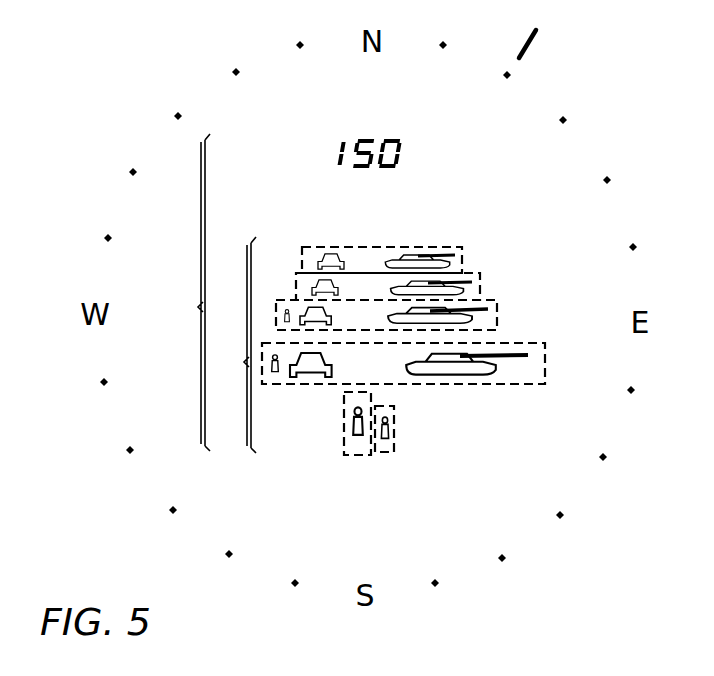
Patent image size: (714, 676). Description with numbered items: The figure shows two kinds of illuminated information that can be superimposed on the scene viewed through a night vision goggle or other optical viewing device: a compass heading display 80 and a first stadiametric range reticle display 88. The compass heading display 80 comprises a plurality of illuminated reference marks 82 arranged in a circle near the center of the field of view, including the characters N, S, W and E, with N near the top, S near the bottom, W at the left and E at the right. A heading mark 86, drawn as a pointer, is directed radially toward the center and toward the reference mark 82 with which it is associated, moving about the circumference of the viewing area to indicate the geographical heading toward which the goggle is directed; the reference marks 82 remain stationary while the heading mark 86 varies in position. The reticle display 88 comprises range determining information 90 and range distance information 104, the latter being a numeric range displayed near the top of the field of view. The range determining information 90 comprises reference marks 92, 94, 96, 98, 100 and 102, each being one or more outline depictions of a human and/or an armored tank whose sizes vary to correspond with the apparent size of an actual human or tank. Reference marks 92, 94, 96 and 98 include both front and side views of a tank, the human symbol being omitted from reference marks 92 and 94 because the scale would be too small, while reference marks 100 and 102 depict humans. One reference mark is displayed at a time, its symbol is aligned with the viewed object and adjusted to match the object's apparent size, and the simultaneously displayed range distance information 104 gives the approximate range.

The compass heading display 80 is at (168, 150).
The reference marks 82 is at (302, 46).
The heading mark 86 is at (533, 46).
The first stadiametric range reticle display 88 is at (187, 292).
The range determining information 90 is at (233, 345).
The reference mark 92 is at (462, 258).
The reference mark 94 is at (480, 286).
The reference mark 96 is at (497, 316).
The reference mark 98 is at (545, 373).
The reference mark 100 is at (394, 428).
The reference mark 102 is at (344, 428).
The numeric range figure 104 is at (334, 152).